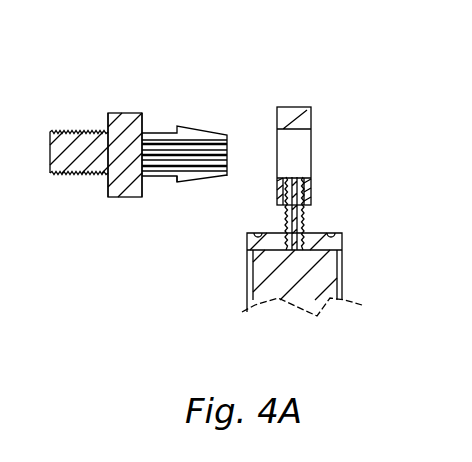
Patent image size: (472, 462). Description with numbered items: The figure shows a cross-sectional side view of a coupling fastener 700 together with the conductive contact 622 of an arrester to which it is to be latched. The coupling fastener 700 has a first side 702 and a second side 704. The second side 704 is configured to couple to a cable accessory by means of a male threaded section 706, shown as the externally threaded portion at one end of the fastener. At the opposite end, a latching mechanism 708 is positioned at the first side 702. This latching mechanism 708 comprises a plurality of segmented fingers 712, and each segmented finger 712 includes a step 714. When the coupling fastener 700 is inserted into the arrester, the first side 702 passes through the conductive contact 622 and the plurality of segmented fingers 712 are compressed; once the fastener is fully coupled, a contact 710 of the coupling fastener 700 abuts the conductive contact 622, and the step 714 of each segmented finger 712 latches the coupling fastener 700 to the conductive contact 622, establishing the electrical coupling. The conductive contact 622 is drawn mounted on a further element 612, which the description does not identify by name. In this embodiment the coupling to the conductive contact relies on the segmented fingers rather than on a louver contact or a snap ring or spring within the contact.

The coupling fastener 700 is at (125, 112).
The first side 702 is at (192, 118).
The second side 704 is at (60, 122).
The male threaded section 706 is at (57, 175).
The latching mechanism 708 is at (183, 192).
The contact 710 is at (120, 195).
The segmented finger 712 is at (208, 182).
The step 714 is at (175, 180).
The conductive contact 622 is at (292, 105).
The housing 612 is at (323, 280).